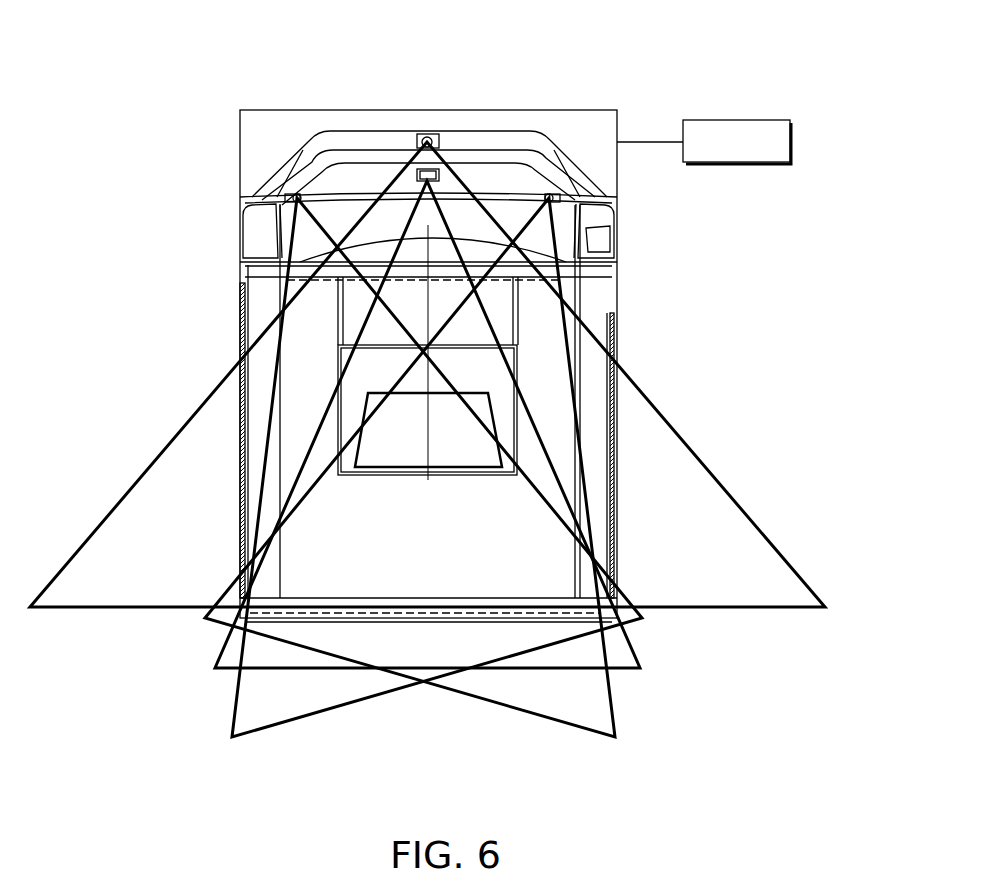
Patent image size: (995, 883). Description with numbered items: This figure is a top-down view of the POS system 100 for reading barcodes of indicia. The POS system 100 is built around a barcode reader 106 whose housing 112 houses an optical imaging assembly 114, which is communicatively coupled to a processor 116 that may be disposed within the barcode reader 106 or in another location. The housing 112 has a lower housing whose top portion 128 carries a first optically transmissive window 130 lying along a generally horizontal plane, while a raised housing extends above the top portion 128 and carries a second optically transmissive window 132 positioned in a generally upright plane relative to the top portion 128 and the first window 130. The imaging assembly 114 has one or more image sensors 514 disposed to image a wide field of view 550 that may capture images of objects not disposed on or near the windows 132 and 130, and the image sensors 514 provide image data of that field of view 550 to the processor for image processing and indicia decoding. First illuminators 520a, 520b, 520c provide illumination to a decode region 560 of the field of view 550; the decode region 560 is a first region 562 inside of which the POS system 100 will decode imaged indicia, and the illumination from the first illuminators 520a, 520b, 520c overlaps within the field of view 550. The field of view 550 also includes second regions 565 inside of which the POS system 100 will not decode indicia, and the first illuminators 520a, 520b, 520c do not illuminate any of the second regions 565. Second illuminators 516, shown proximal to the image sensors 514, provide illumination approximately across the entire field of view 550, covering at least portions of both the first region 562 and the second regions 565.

The POS system 100 is at (224, 54).
The housing 112 is at (240, 143).
The barcode reader 106 is at (617, 182).
The optical imaging assembly 114 is at (509, 169).
The processor 116 is at (790, 141).
The top portion 128 is at (597, 403).
The first optically transmissive window 130 is at (520, 352).
The second optically transmissive window 132 is at (497, 240).
The image sensors 514 is at (432, 168).
The second illuminators 516 is at (417, 142).
The first illuminator 520a is at (263, 196).
The first illuminator 520b is at (612, 220).
The first illuminator 520c is at (445, 160).
The field of view 550 is at (783, 562).
The decode region 560 is at (265, 390).
The first region 562 is at (315, 330).
The second regions 565 is at (158, 593).